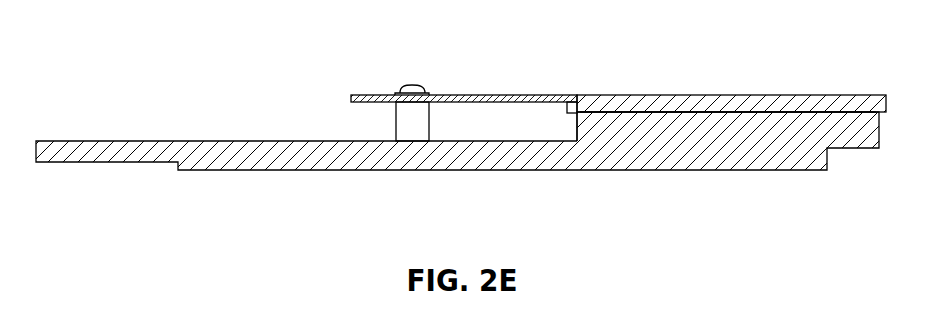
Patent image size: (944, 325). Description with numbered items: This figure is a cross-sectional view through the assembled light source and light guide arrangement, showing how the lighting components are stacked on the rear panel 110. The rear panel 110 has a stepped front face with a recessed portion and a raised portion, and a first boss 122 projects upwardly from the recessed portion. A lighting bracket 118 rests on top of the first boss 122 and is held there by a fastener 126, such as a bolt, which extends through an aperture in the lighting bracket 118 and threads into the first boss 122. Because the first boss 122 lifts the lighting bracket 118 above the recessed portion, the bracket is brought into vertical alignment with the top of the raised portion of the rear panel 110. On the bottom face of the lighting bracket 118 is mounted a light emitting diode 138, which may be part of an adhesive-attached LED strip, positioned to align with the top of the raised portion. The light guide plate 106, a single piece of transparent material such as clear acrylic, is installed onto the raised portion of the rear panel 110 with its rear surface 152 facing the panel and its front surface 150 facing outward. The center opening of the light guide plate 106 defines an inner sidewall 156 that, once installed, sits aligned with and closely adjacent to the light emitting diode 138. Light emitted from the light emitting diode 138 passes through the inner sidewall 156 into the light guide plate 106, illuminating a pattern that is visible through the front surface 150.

The light guide plate 106 is at (813, 105).
The rear panel 110 is at (282, 172).
The lighting bracket 118 is at (487, 96).
The first boss 122 is at (395, 127).
The fastener 126 is at (410, 83).
The light emitting diode 138 is at (573, 113).
The front surface 150 is at (675, 96).
The rear surface 152 is at (758, 113).
The inner sidewall 156 is at (578, 99).